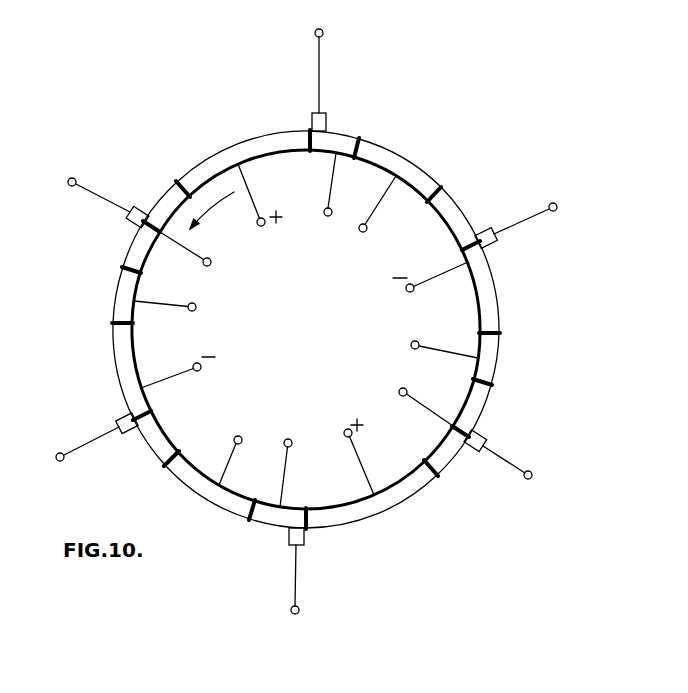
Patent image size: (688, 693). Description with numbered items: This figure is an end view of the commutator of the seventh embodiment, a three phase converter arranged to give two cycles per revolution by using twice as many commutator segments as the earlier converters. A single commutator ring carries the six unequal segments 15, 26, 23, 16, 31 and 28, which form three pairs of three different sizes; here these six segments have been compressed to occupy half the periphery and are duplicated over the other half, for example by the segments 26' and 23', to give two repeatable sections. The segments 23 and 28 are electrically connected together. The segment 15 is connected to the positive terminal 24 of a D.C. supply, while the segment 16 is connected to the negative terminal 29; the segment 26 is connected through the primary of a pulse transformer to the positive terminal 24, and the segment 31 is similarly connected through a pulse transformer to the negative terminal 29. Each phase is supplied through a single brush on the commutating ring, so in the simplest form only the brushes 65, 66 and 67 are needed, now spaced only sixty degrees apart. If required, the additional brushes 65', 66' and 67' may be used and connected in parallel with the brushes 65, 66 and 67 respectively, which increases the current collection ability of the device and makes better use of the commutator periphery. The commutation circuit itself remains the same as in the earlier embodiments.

The commutator segment 15 is at (248, 145).
The commutator segment 16 is at (498, 292).
The commutator segment 23 is at (411, 185).
The positive terminal 24 is at (306, 329).
The commutator segment 26 is at (343, 160).
The duplicated commutator segment 26' is at (274, 499).
The duplicated commutator segment 23' is at (210, 481).
The commutator segment 28 is at (488, 405).
The negative terminal 29 is at (304, 329).
The commutator segment 31 is at (501, 352).
The output brush 65 is at (302, 80).
The additional brush 65' is at (318, 571).
The output brush 66 is at (516, 239).
The additional brush 66' is at (97, 444).
The output brush 67 is at (493, 462).
The additional brush 67' is at (118, 198).